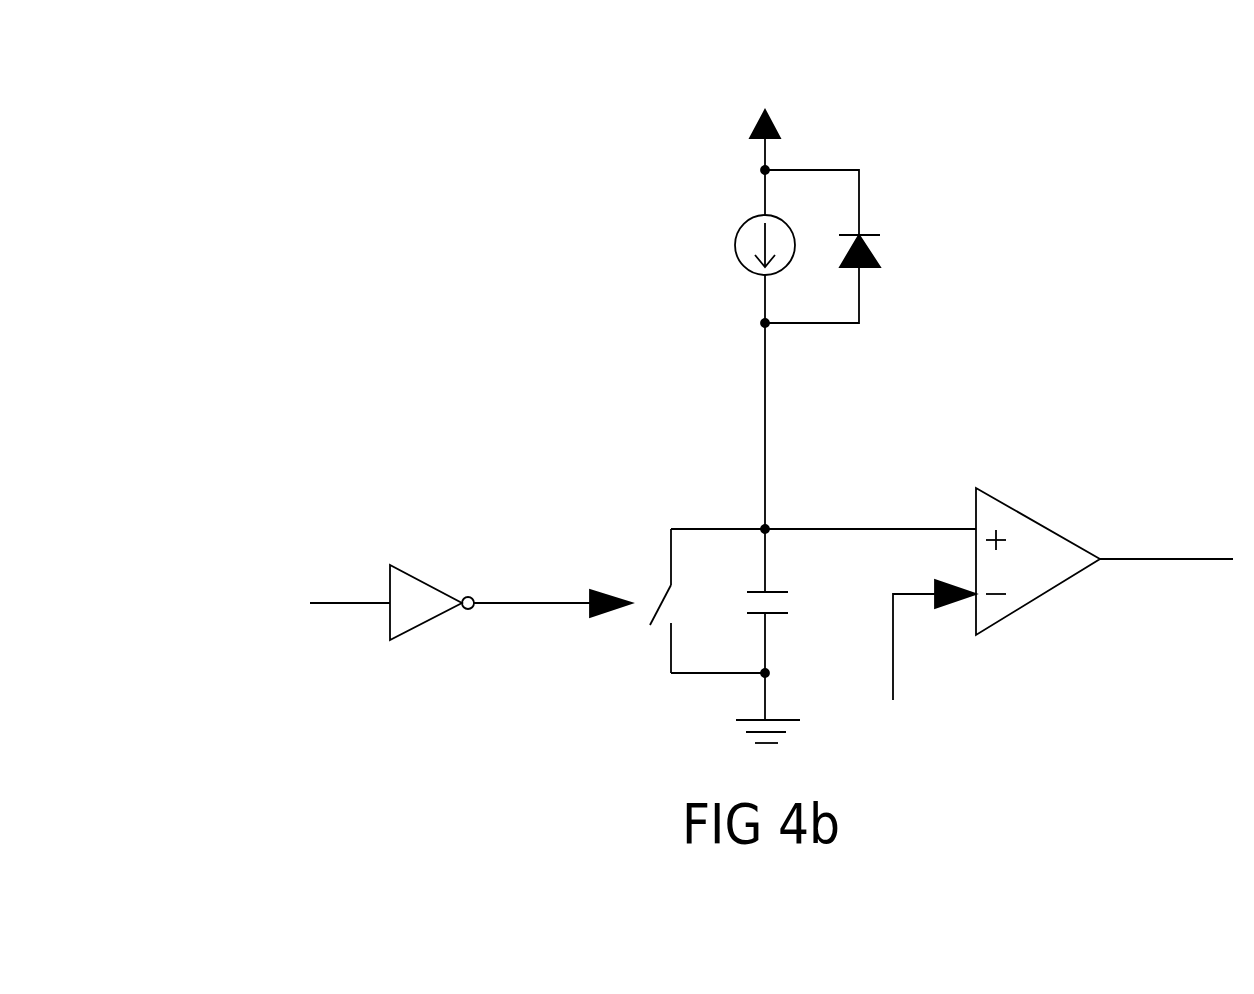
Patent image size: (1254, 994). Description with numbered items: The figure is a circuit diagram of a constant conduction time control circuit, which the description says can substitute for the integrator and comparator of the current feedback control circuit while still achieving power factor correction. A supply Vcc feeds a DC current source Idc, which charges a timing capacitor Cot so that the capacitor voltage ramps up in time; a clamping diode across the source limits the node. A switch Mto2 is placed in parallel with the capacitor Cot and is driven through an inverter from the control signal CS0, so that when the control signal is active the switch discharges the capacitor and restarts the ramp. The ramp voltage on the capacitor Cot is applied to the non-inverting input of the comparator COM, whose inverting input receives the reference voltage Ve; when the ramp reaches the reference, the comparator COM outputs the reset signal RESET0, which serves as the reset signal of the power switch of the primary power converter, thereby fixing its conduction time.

The supply voltage Vcc is at (773, 121).
The DC current source Idc is at (742, 246).
The timing capacitor Cot is at (798, 601).
The reset switch transistor Mto2 is at (671, 602).
The control signal input with inverter CS0 is at (434, 599).
The comparator COM is at (1038, 561).
The reference voltage input Ve is at (928, 661).
The reset signal RESET0 is at (1171, 590).